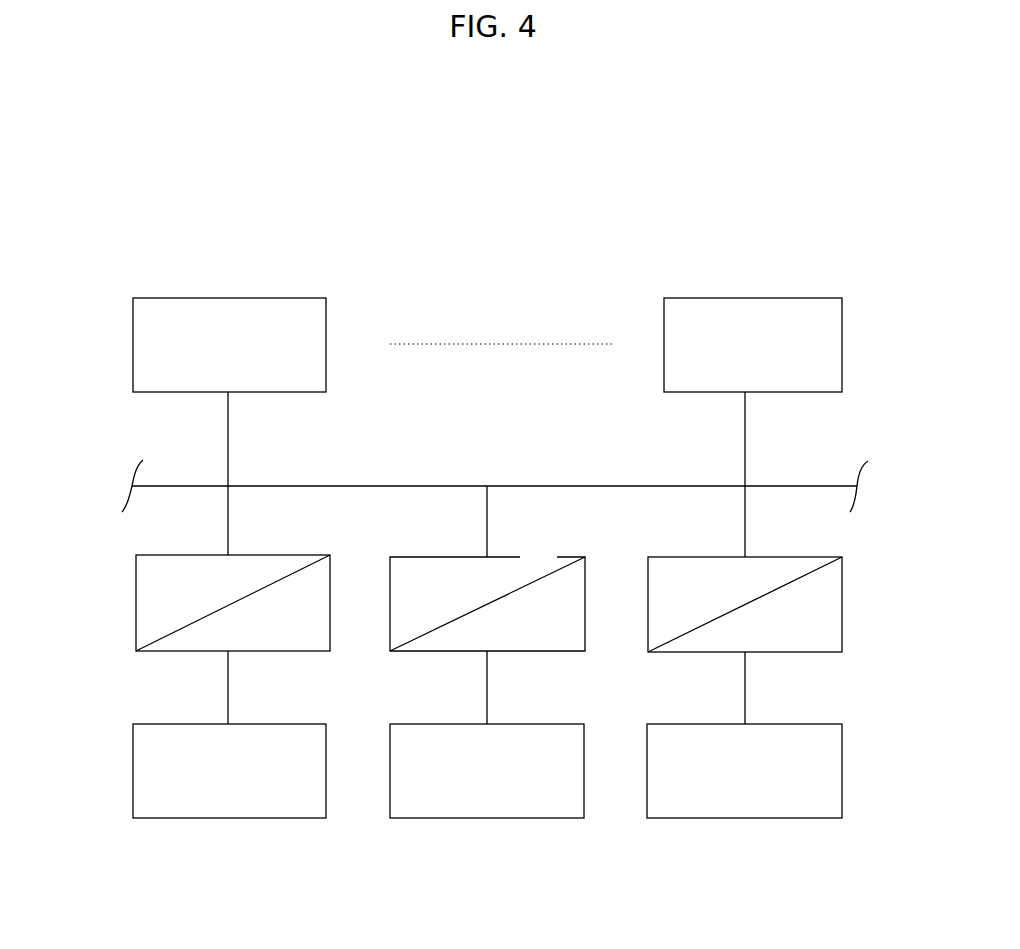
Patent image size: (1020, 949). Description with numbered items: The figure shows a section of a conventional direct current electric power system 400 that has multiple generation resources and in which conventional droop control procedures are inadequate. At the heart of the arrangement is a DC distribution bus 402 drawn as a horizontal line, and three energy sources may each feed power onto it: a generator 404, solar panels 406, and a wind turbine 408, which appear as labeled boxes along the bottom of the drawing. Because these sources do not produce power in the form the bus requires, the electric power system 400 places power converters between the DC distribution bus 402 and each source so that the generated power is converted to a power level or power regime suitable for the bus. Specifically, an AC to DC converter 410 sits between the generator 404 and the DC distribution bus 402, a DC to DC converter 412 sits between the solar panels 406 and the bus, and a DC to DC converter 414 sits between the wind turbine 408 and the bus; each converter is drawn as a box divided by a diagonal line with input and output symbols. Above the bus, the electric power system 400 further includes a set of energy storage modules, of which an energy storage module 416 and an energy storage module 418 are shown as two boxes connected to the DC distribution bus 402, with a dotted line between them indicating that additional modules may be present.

The electric power system 400 is at (465, 148).
The DC distribution bus 402 is at (410, 486).
The generator 404 is at (231, 826).
The solar panels 406 is at (495, 826).
The wind turbine 408 is at (758, 826).
The AC to DC converter 410 is at (132, 600).
The DC to DC converter 412 is at (520, 557).
The DC to DC converter 414 is at (847, 597).
The energy storage module 416 is at (228, 293).
The energy storage module 418 is at (768, 296).